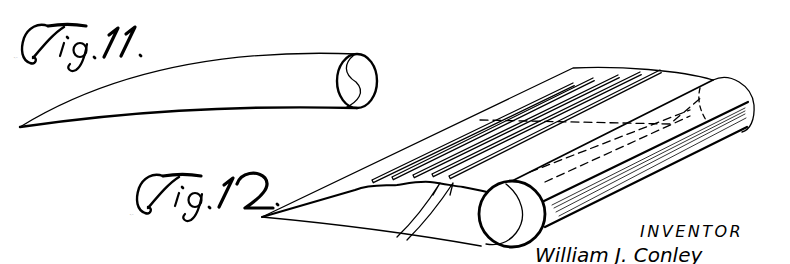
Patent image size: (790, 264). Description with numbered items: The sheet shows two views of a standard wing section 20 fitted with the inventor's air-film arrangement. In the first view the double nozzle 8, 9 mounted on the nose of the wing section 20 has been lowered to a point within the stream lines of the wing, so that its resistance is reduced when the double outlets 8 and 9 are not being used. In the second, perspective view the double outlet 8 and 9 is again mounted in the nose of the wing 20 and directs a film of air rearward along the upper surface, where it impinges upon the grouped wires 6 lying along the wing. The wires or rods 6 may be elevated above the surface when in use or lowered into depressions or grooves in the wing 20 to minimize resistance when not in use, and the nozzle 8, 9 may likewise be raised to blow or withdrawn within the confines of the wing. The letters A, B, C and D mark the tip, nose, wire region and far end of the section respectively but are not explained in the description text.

In FIG. 12, the grouped wires 6 is at (418, 175).
In FIG. 11, the double outlet 8 is at (352, 55).
In FIG. 12, the double outlet 8 is at (502, 186).
In FIG. 11, the double outlet 9 is at (357, 53).
In FIG. 12, the double outlet 9 is at (503, 185).
In FIG. 11, the standard wing section 20 is at (278, 100).
In FIG. 12, the standard wing section 20 is at (357, 217).
In FIG. 12, the trailing edge tip A is at (241, 231).
In FIG. 12, the leading edge cylinder B is at (614, 160).
In FIG. 12, the slat group C is at (443, 119).
In FIG. 12, the cylinder end cap D is at (726, 112).